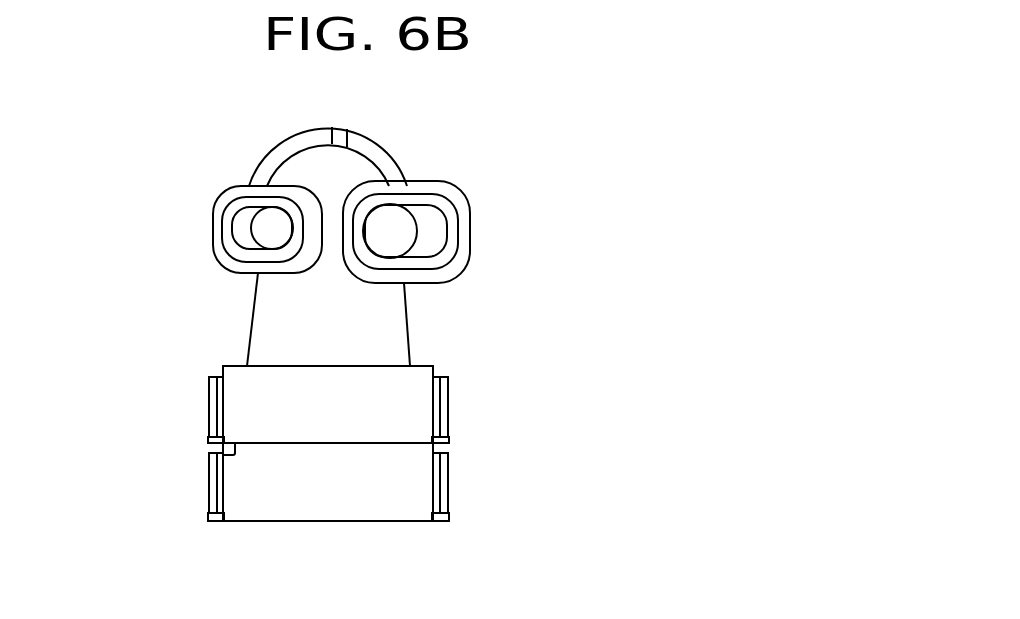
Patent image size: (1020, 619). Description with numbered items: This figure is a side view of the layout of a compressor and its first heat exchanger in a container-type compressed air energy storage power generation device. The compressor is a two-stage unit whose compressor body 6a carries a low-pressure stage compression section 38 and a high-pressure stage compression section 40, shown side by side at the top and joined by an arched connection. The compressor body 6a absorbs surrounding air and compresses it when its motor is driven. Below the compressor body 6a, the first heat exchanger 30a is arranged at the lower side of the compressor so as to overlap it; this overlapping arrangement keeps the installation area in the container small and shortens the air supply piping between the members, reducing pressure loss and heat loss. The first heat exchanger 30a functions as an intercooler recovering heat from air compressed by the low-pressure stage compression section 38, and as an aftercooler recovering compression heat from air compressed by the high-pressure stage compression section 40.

The high-pressure stage compression section 40 is at (219, 218).
The low-pressure stage compression section 38 is at (453, 215).
The compressor body 6a is at (257, 283).
The first heat exchanger 30a is at (445, 515).